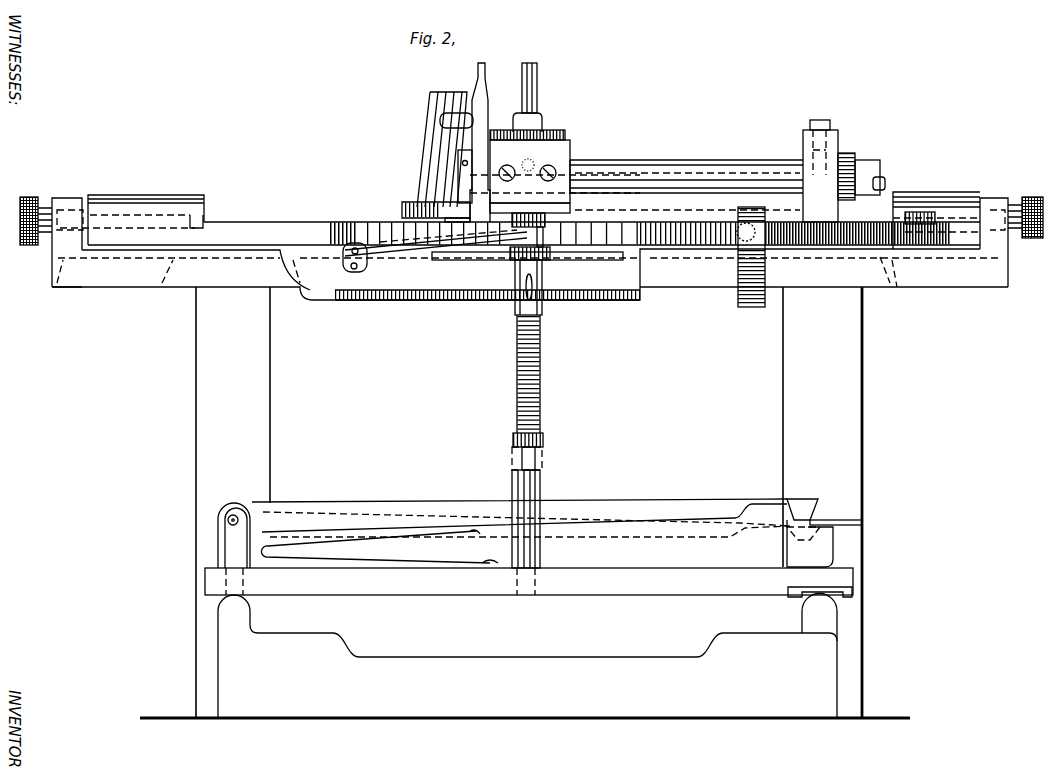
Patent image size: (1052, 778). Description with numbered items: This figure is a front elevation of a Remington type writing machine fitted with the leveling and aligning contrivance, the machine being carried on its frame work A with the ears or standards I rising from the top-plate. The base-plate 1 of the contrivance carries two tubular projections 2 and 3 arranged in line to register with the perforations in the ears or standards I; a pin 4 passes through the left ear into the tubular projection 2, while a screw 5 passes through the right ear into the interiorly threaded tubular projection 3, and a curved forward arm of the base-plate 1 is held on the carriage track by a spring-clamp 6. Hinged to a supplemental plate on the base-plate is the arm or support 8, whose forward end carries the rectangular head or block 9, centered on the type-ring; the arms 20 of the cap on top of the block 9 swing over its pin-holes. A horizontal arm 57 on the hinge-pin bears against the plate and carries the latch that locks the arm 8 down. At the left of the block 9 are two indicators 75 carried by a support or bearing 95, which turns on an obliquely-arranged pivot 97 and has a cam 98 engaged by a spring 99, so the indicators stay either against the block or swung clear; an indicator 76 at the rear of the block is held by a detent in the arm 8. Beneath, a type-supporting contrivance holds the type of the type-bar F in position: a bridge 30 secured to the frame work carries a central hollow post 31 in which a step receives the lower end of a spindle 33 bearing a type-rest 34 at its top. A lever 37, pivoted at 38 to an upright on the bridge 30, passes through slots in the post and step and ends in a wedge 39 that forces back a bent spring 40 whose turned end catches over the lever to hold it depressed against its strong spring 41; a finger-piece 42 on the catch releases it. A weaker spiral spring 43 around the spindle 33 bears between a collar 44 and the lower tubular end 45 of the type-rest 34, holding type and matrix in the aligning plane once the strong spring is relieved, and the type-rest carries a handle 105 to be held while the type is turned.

The base-plate 1 is at (526, 253).
The tubular projection 2 is at (146, 212).
The tubular projection 3 is at (936, 213).
The pin 4 is at (85, 222).
The screw 5 is at (956, 212).
The spring-clamp 6 is at (751, 266).
The arm or support 8 is at (686, 177).
The head or block 9 is at (555, 176).
The arms of the cap 20 is at (531, 127).
The bridge 30 is at (529, 582).
The hollow post 31 is at (541, 560).
The spindle 33 is at (513, 452).
The type-rest 34 is at (540, 233).
The lever 37 is at (521, 518).
The pivot 38 is at (236, 513).
The wedge 39 is at (815, 510).
The bent spring 40 is at (821, 543).
The spring 41 is at (452, 534).
The finger-piece 42 is at (862, 523).
The spiral spring 43 is at (541, 390).
The collar 44 is at (544, 438).
The lower tubular end 45 is at (515, 309).
The arm 57 is at (844, 171).
The indicator 75 is at (468, 142).
The indicator 76 is at (537, 97).
The support or bearing 95 is at (430, 153).
The pivot 97 is at (402, 216).
The cam 98 is at (405, 205).
The spring 99 is at (404, 202).
The handle 105 is at (445, 260).
The frame work A is at (527, 656).
The type-bar or lever F is at (435, 251).
The ears or standards I is at (1000, 187).